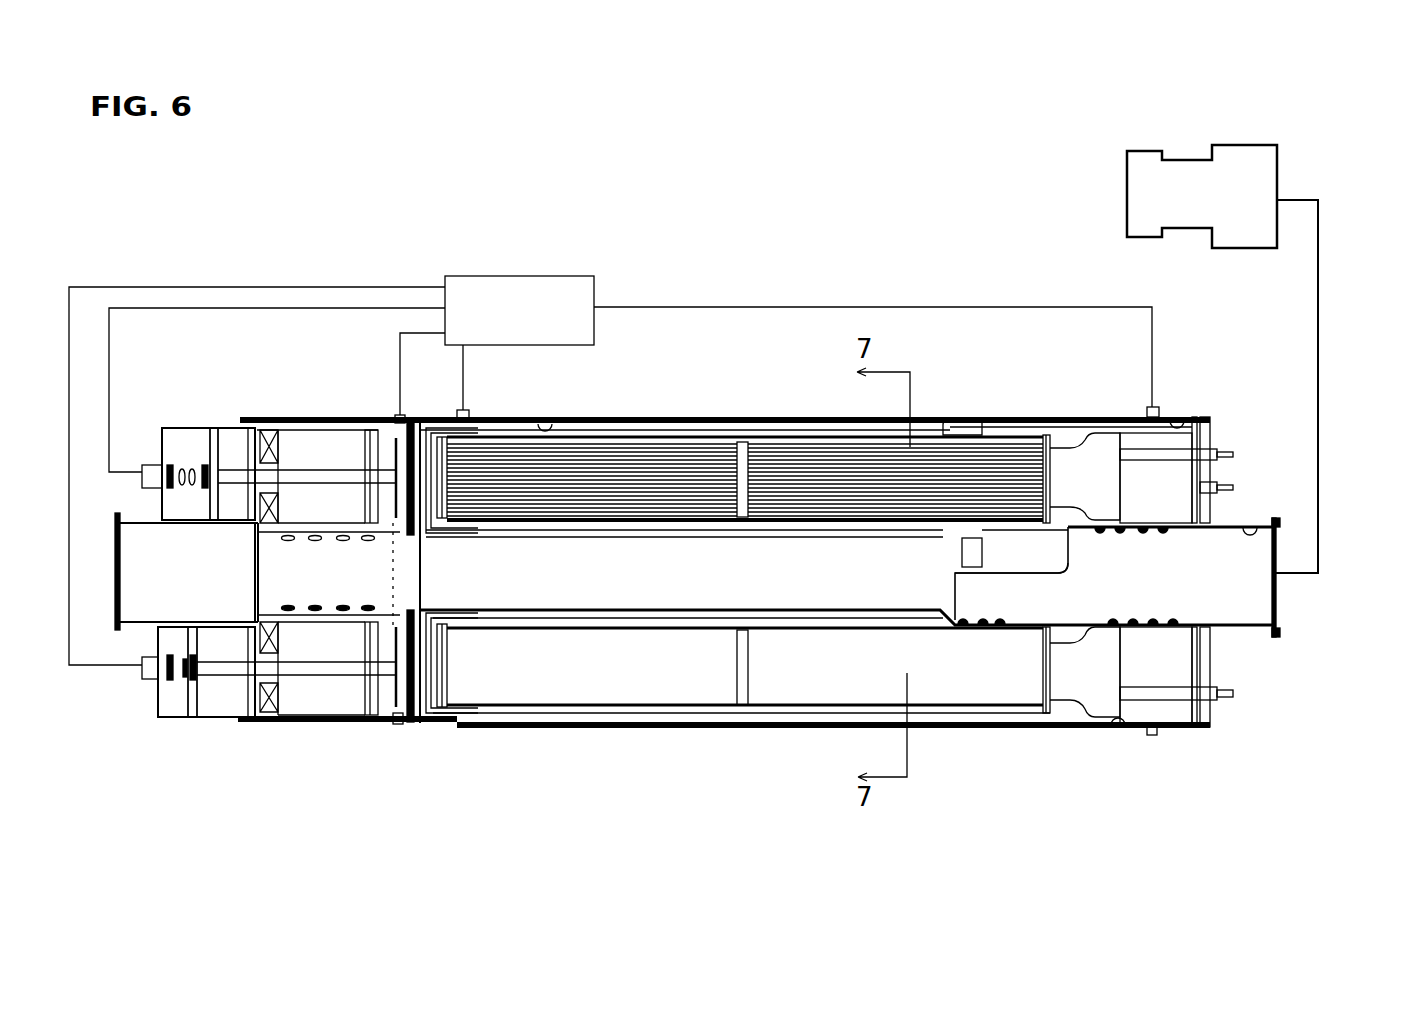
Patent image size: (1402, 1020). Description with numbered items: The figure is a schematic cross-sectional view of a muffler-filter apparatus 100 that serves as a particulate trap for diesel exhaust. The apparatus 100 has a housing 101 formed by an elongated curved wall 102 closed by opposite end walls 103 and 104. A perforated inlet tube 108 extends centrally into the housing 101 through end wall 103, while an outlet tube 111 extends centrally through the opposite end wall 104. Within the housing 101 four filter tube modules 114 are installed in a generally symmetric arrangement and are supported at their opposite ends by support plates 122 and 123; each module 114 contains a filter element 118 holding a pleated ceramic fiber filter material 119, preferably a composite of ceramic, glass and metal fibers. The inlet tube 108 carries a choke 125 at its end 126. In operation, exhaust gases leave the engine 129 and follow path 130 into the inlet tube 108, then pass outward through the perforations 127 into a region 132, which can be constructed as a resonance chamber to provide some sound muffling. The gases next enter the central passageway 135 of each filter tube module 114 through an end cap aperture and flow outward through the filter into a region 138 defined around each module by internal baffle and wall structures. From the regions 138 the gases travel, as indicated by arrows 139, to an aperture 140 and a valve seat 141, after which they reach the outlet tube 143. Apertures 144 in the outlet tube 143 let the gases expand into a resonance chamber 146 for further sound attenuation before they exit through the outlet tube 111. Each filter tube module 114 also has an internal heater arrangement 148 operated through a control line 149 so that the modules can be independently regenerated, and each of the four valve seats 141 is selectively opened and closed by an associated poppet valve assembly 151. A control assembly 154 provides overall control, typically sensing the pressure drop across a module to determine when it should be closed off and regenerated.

The muffler-filter apparatus 100 is at (854, 272).
The housing 101 is at (692, 733).
The elongated curved wall 102 is at (508, 733).
The end wall 103 is at (1203, 437).
The end wall 104 is at (160, 457).
The inlet tube 108 is at (1272, 520).
The outlet tube 111 is at (115, 543).
The filter tube module 114 is at (623, 617).
The filter element 118 is at (553, 523).
The pleated ceramic fiber filter material 119 is at (492, 445).
The support plate 122 is at (973, 413).
The support plate 123 is at (430, 425).
The choke 125 is at (957, 588).
The end 126 is at (953, 573).
The perforations 127 is at (1087, 532).
The engine 129 is at (1225, 150).
The path 130 is at (1320, 287).
The region 132 is at (1192, 413).
The central passageway 135 is at (1058, 487).
The region 138 is at (560, 413).
The arrows 139 is at (410, 415).
The aperture 140 is at (398, 530).
The valve seat 141 is at (355, 423).
The outlet tube 143 is at (302, 540).
The apertures 144 is at (325, 605).
The resonance chamber 146 is at (347, 522).
The internal heater arrangement 148 is at (1125, 503).
The control line 149 is at (1177, 463).
The poppet valve assembly 151 is at (230, 463).
The control assembly 154 is at (529, 264).